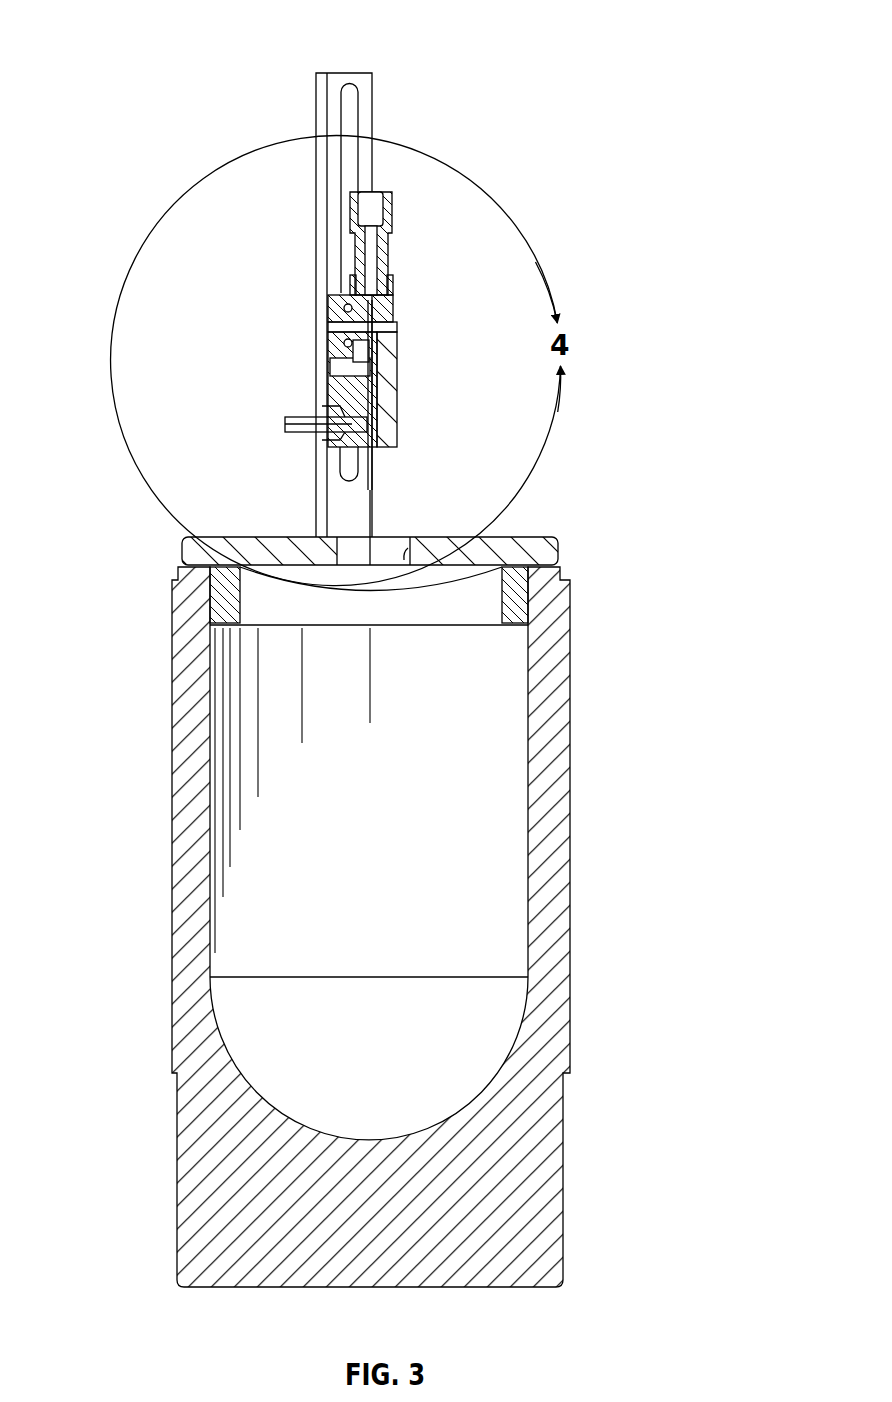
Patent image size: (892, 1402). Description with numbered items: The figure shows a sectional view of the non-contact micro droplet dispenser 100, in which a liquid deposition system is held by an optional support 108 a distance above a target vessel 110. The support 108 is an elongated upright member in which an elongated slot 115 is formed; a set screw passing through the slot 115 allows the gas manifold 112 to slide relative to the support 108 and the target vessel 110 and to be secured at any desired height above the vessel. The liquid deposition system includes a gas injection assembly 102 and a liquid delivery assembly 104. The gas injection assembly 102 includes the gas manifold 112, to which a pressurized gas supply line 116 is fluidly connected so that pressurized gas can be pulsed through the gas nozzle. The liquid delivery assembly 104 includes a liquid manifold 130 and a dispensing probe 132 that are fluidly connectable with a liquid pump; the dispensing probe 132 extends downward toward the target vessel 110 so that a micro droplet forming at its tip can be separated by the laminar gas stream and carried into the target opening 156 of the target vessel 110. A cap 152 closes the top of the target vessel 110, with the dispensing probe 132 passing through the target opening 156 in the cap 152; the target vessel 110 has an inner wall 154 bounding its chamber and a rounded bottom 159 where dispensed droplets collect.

The non-contact micro droplet dispenser 100 is at (184, 50).
The support 108 is at (364, 100).
The elongated slot 115 is at (344, 140).
The liquid manifold 130 is at (393, 220).
The liquid delivery assembly 104 is at (393, 306).
The gas injection assembly 102 is at (398, 380).
The gas manifold 112 is at (398, 414).
The pressurized gas supply line 116 is at (300, 418).
The dispensing probe 132 is at (376, 488).
The target opening 156 is at (433, 567).
The cap 152 is at (556, 540).
The inner wall 154 is at (527, 776).
The target vessel 110 is at (571, 932).
The container bottom 159 is at (366, 1139).